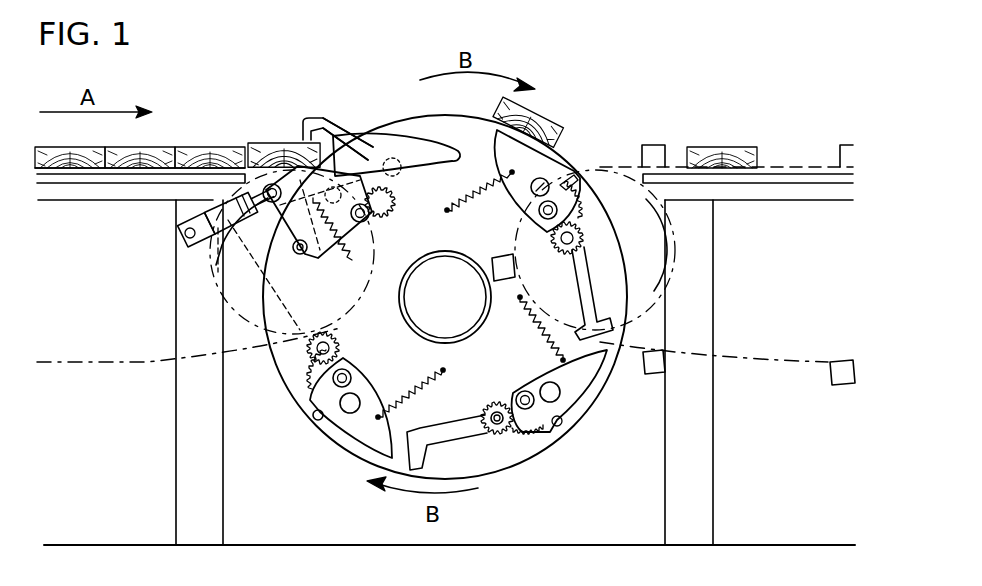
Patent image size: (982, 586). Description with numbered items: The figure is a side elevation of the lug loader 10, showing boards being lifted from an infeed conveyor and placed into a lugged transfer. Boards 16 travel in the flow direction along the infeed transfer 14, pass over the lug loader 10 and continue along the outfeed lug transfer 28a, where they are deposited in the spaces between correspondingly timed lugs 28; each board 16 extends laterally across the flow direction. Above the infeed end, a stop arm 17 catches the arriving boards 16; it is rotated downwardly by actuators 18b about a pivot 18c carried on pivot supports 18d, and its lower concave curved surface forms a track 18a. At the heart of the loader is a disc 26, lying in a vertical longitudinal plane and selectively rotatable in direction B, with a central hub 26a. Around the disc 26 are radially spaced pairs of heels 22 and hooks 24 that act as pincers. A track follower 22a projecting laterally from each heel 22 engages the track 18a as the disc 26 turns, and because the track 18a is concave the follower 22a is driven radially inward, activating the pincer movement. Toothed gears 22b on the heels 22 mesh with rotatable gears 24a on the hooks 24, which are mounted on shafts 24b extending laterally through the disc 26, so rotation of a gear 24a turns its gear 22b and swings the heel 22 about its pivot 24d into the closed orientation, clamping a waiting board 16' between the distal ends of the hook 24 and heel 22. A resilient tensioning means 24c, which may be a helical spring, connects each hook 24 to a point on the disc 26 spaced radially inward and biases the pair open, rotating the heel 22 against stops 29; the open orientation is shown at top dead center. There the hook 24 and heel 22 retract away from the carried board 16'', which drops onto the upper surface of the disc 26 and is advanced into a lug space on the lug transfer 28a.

The lug loader apparatus 10 is at (565, 60).
The infeed transfer 14 is at (80, 178).
The boards 16 is at (406, 129).
The waiting board 16' is at (270, 129).
The carried board 16'' is at (547, 116).
The stop arm 17 is at (346, 134).
The tracks 18a is at (406, 152).
The actuators 18b is at (186, 223).
The pivot 18c is at (230, 280).
The pivot supports 18d is at (247, 258).
The heels 22 is at (500, 148).
The track follower 22a is at (367, 223).
The toothed gears 22b is at (531, 438).
The hooks 24 is at (326, 128).
The rotatable gears 24a is at (491, 432).
The shafts 24b is at (501, 430).
The resilient biasing tensioning means 24c is at (470, 205).
The pivot 24d is at (546, 183).
The disc 26 is at (442, 311).
The drum hub 26a is at (412, 278).
The lugs 28 is at (668, 145).
The outfeed lug transfer 28a is at (798, 166).
The stops 29 is at (311, 420).